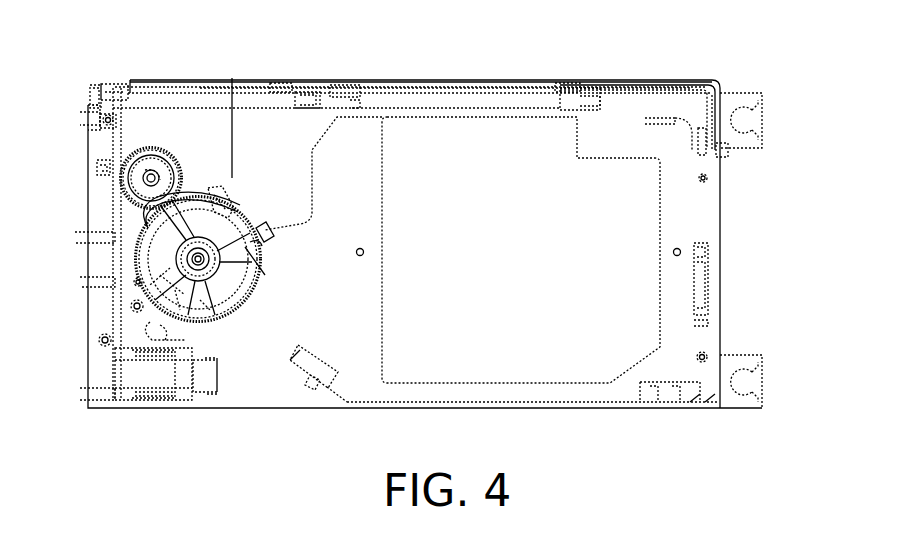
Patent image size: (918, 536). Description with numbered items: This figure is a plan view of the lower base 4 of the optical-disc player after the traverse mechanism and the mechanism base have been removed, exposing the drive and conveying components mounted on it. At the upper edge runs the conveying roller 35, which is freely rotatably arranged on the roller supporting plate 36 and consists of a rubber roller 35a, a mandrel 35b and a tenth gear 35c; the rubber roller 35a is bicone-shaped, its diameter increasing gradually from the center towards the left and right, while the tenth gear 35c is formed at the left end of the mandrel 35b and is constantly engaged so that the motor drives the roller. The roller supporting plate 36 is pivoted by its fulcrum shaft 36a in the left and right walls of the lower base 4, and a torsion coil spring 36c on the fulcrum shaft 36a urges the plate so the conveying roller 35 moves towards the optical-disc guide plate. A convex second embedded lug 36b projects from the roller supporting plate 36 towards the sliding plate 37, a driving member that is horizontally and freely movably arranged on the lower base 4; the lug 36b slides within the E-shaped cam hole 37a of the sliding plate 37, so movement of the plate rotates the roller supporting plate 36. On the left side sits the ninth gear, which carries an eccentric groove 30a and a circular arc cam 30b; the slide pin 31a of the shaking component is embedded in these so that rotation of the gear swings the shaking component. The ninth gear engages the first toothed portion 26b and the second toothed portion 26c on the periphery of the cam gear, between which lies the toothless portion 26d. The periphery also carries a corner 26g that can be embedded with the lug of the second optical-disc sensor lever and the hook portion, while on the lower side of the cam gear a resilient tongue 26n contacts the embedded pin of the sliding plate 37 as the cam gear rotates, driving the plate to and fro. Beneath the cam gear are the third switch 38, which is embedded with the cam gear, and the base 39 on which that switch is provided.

The lower base 4 is at (160, 80).
The first toothed portion 26b is at (228, 192).
The second toothed portion 26c is at (262, 255).
The toothless portion 26d is at (240, 205).
The corner 26g is at (275, 230).
The resilient tongue 26n is at (252, 270).
The eccentric groove 30a is at (150, 150).
The circular arc cam 30b is at (180, 168).
The slide pin 31a is at (162, 178).
The conveying roller 35 is at (390, 80).
The rubber roller 35a is at (340, 86).
The mandrel 35b is at (94, 90).
The tenth gear 35c is at (112, 85).
The roller supporting plate 36 is at (655, 92).
The fulcrum shaft 36a is at (722, 150).
The second embedded lug 36b is at (275, 82).
The torsion coil spring 36c is at (690, 140).
The sliding plate 37 is at (312, 195).
The cam hole 37a is at (300, 88).
The third switch 38 is at (132, 307).
The base 39 is at (150, 322).